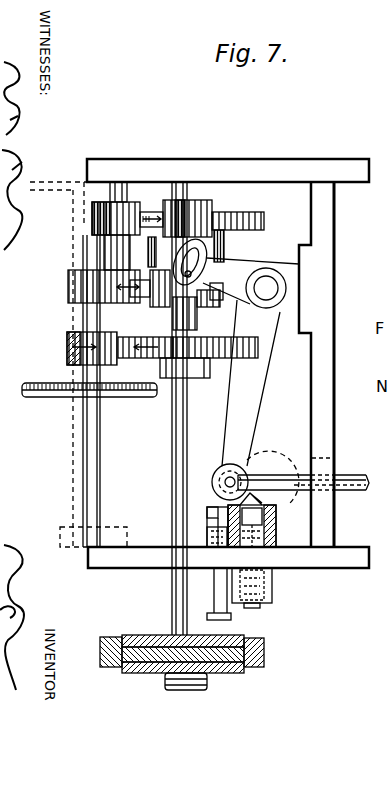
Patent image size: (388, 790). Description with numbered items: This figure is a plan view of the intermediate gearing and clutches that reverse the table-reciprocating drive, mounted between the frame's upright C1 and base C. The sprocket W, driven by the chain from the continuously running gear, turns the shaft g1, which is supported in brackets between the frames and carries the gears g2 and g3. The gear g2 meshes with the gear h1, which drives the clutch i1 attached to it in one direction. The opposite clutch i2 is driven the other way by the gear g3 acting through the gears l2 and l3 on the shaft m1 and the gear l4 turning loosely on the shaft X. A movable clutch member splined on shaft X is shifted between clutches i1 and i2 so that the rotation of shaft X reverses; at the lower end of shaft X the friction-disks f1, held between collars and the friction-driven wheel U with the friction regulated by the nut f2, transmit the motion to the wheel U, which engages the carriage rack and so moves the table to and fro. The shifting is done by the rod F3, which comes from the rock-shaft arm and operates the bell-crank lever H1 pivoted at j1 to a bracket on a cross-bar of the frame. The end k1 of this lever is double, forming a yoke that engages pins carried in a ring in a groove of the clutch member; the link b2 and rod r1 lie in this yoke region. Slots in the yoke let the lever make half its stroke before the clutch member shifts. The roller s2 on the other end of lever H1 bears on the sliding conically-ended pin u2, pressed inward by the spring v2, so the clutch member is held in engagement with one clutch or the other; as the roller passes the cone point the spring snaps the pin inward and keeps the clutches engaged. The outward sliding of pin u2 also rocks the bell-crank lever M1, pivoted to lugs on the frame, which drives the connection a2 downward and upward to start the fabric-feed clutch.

The upright column of frame C1 is at (347, 159).
The base of frame C is at (346, 563).
The shaft X is at (172, 464).
The shaft g1 is at (93, 421).
The shaft m1 is at (127, 226).
The gear l3 is at (92, 218).
The gear l4 is at (250, 209).
The clutch i2 is at (224, 238).
The rod r1 is at (160, 252).
The gear l2 is at (152, 299).
The link b2 is at (190, 271).
The end of lever k1 is at (251, 281).
The pivot j1 is at (278, 289).
The gear g3 is at (68, 286).
The gear g2 is at (67, 342).
The gear h1 is at (164, 359).
The clutch i1 is at (215, 359).
The sprocket W is at (45, 383).
The bell-crank lever H1 is at (257, 384).
The roller s2 is at (246, 472).
The rod F3 is at (357, 474).
The sliding conically-ended pin u2 is at (277, 511).
The spring v2 is at (278, 588).
The bell-crank lever M1 is at (218, 522).
The connection a2 is at (211, 612).
The friction-disks f1 is at (151, 637).
The friction-driven wheel U is at (265, 653).
The nut f2 is at (192, 677).